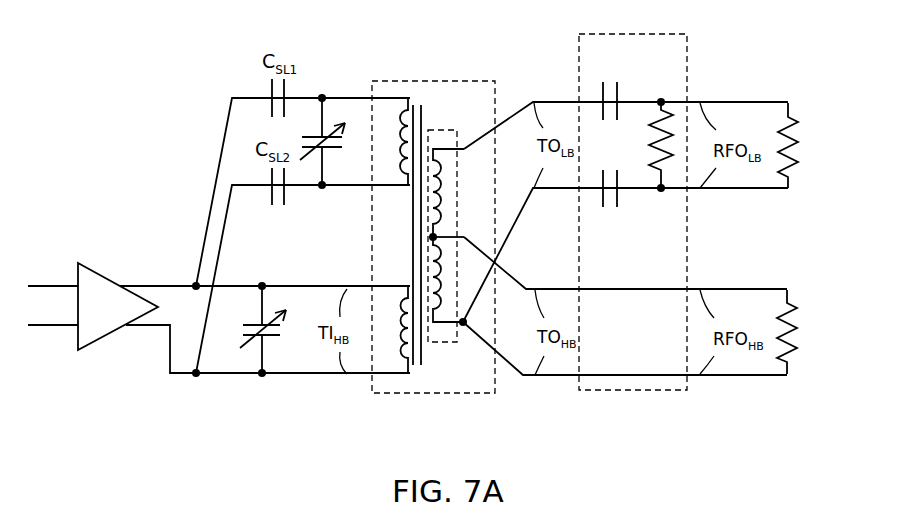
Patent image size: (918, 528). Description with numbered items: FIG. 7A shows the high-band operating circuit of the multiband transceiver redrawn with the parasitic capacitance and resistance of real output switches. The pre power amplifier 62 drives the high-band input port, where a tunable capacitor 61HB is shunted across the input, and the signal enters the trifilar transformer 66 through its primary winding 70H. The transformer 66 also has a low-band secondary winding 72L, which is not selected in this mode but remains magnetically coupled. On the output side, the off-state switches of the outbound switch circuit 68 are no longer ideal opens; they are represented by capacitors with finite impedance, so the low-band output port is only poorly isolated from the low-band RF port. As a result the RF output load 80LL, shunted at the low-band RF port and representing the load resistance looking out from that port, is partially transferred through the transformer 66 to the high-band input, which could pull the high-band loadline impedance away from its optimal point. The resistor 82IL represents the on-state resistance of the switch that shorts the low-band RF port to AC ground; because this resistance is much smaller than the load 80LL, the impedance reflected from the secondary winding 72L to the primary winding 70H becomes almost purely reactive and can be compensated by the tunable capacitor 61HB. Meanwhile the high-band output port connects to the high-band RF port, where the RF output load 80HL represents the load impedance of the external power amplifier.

The pre power amplifier 62 is at (89, 268).
The tunable capacitor 61HB is at (272, 329).
The trifilar transformer 66 is at (425, 262).
The primary winding 70H is at (383, 374).
The secondary winding 72L is at (458, 342).
The outbound switch circuit 68 is at (633, 195).
The resistor 82IL is at (660, 166).
The RF output load 80LL is at (804, 133).
The RF output load 80HL is at (803, 318).